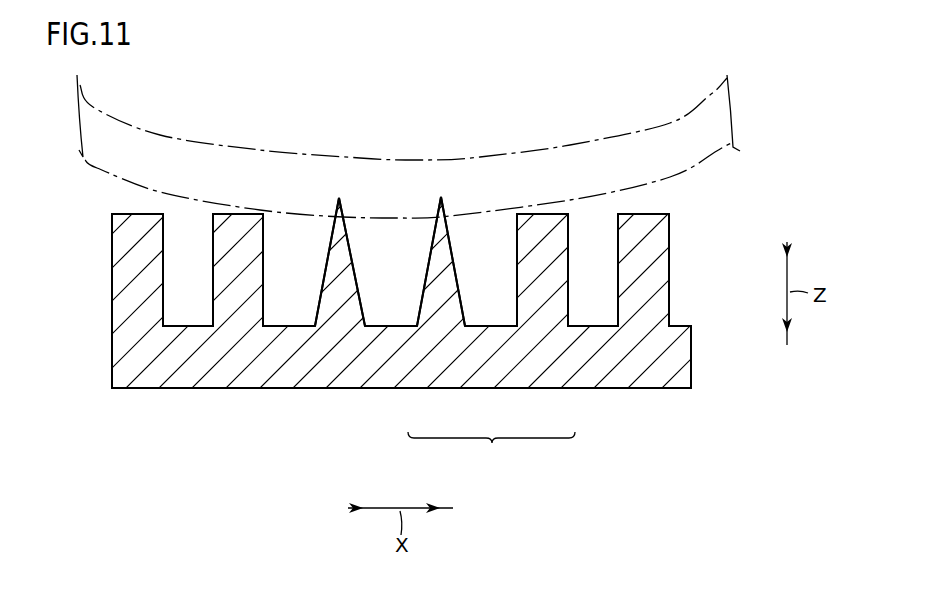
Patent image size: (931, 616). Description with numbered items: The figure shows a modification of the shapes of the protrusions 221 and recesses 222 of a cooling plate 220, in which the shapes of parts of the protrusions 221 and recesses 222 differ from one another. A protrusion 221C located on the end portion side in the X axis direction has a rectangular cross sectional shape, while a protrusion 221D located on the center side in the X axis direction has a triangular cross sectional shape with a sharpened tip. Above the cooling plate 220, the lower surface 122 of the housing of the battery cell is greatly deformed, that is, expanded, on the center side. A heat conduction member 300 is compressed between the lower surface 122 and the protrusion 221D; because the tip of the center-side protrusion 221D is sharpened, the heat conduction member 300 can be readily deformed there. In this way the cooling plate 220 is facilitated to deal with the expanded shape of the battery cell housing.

The lower surface 122 is at (502, 155).
The heat conduction member 300 is at (570, 173).
The recess 222 is at (352, 253).
The cooling plate 220 is at (715, 308).
The protrusion 221D is at (442, 293).
The protrusion 221C is at (543, 293).
The protrusions 221 is at (491, 451).